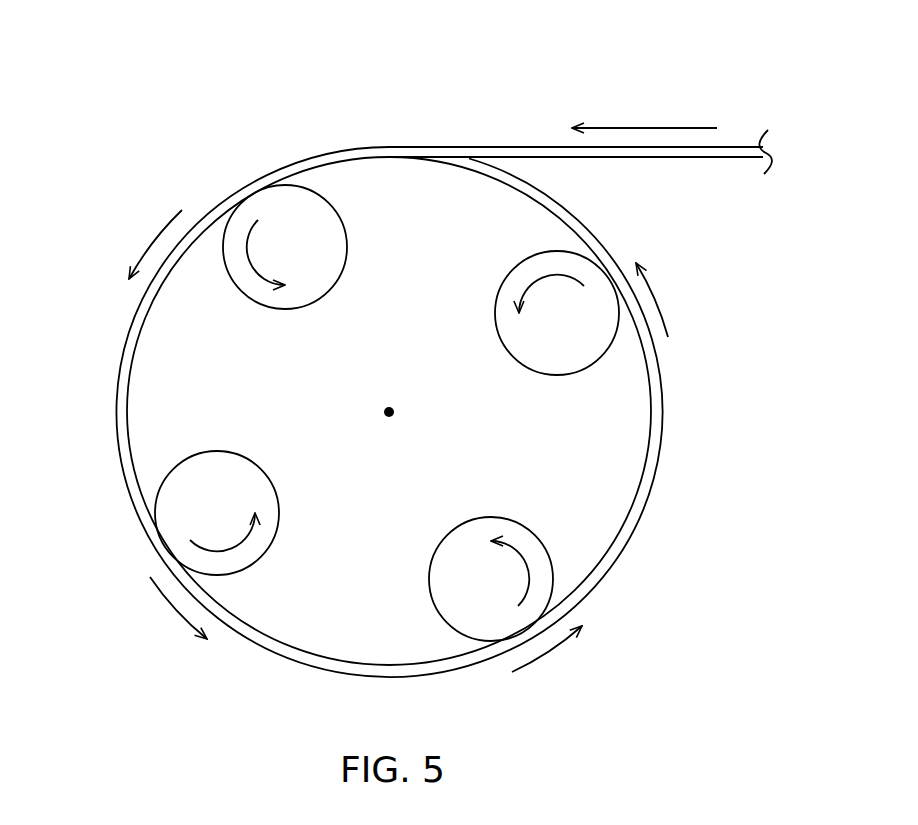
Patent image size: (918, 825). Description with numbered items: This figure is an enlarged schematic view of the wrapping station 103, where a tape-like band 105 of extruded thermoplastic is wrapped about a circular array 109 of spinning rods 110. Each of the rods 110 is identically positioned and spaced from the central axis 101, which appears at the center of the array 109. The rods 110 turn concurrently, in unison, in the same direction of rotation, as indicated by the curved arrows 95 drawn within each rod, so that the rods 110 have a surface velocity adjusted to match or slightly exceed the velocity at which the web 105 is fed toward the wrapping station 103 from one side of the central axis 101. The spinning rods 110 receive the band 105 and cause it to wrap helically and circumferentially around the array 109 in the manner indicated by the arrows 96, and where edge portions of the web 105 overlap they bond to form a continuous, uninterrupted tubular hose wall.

The arrows indicating direction of rotation 95 is at (247, 250).
The arrows indicating wrapping direction 96 is at (652, 127).
The central axis 101 is at (392, 402).
The wrapping station 103 is at (413, 126).
The tape-like band 105 is at (675, 157).
The circular array 109 is at (311, 310).
The spinning rods 110 is at (338, 247).